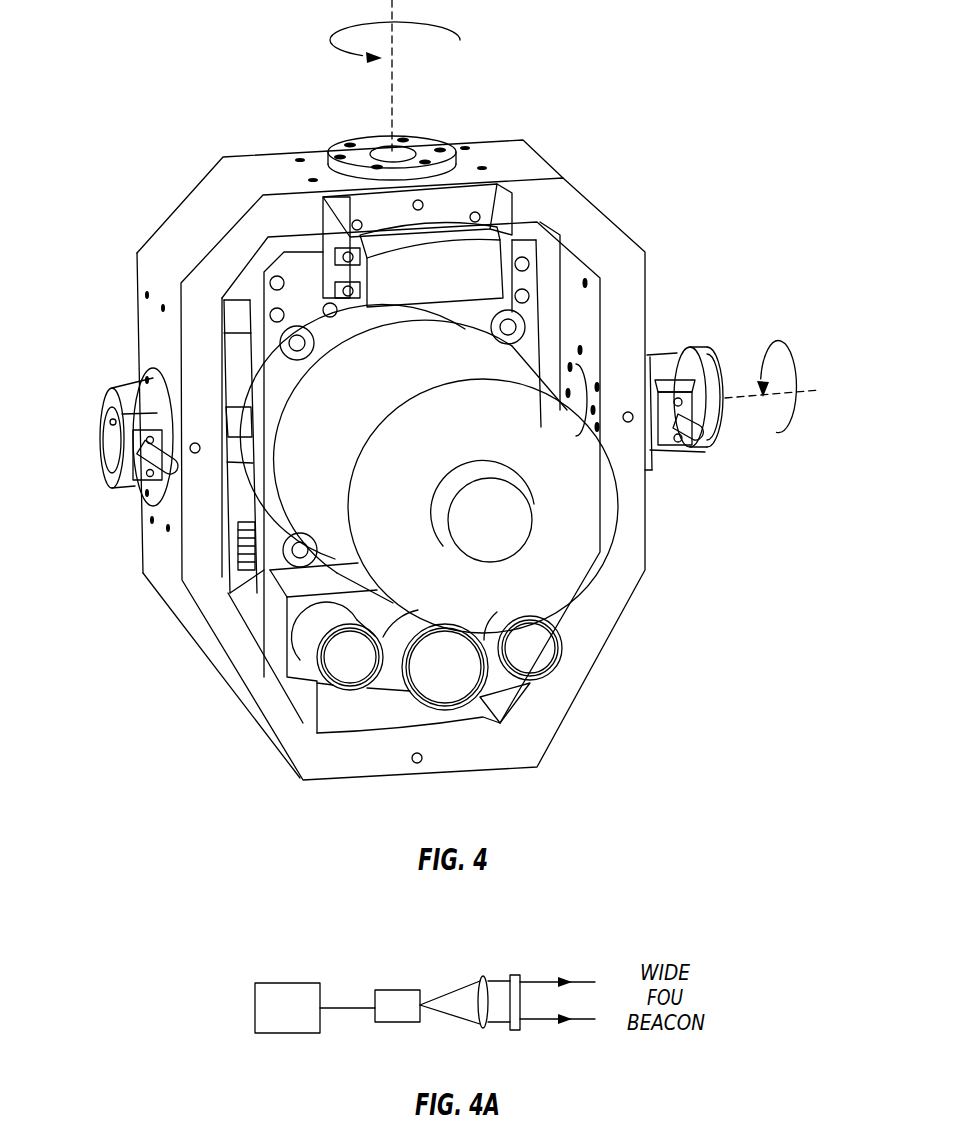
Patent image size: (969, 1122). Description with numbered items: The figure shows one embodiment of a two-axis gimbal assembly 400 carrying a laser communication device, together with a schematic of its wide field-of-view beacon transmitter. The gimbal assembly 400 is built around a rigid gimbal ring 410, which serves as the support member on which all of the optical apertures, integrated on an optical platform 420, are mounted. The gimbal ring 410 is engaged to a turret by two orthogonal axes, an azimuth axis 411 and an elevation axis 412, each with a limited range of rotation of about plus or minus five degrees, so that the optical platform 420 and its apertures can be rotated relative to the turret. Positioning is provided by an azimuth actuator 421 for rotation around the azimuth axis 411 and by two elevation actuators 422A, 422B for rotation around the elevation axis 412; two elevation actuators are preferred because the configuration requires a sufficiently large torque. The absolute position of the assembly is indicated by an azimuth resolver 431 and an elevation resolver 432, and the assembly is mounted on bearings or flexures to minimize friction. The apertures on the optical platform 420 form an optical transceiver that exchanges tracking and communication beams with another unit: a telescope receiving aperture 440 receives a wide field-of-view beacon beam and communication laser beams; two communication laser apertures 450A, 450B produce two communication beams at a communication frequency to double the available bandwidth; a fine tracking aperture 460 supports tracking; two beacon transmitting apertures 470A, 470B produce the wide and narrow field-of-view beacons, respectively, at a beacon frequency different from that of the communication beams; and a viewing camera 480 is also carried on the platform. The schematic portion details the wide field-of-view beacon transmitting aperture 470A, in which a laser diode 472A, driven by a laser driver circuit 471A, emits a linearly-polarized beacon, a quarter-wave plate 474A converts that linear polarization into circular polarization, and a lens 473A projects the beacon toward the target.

In FIG. 4, the gimbal assembly 400 is at (262, 86).
In FIG. 4, the gimbal ring 410 is at (240, 650).
In FIG. 4, the azimuth axis 411 is at (393, 108).
In FIG. 4, the elevation axis 412 is at (743, 398).
In FIG. 4, the optical platform 420 is at (277, 567).
In FIG. 4, the azimuth actuator 421 is at (493, 265).
In FIG. 4, the elevation actuator 422A is at (660, 347).
In FIG. 4, the elevation actuator 422B is at (109, 428).
In FIG. 4, the azimuth resolver 431 is at (433, 722).
In FIG. 4, the elevation resolver 432 is at (698, 372).
In FIG. 4, the telescope receiving aperture 440 is at (582, 563).
In FIG. 4, the communication laser aperture 450A is at (350, 660).
In FIG. 4, the communication laser aperture 450B is at (533, 647).
In FIG. 4, the fine tracking aperture 460 is at (447, 660).
In FIG. 4, the wide FOV beacon transmitting aperture 470A is at (283, 325).
In FIG. 4, the narrow FOV beacon transmitting aperture 470B is at (527, 318).
In FIG. 4, the viewing camera 480 is at (224, 407).
In FIG. 4A, the laser driver circuit 471A is at (290, 983).
In FIG. 4A, the laser diode 472A is at (397, 1023).
In FIG. 4A, the lens 473A is at (480, 1030).
In FIG. 4A, the quarter-wave plate 474A is at (520, 1030).